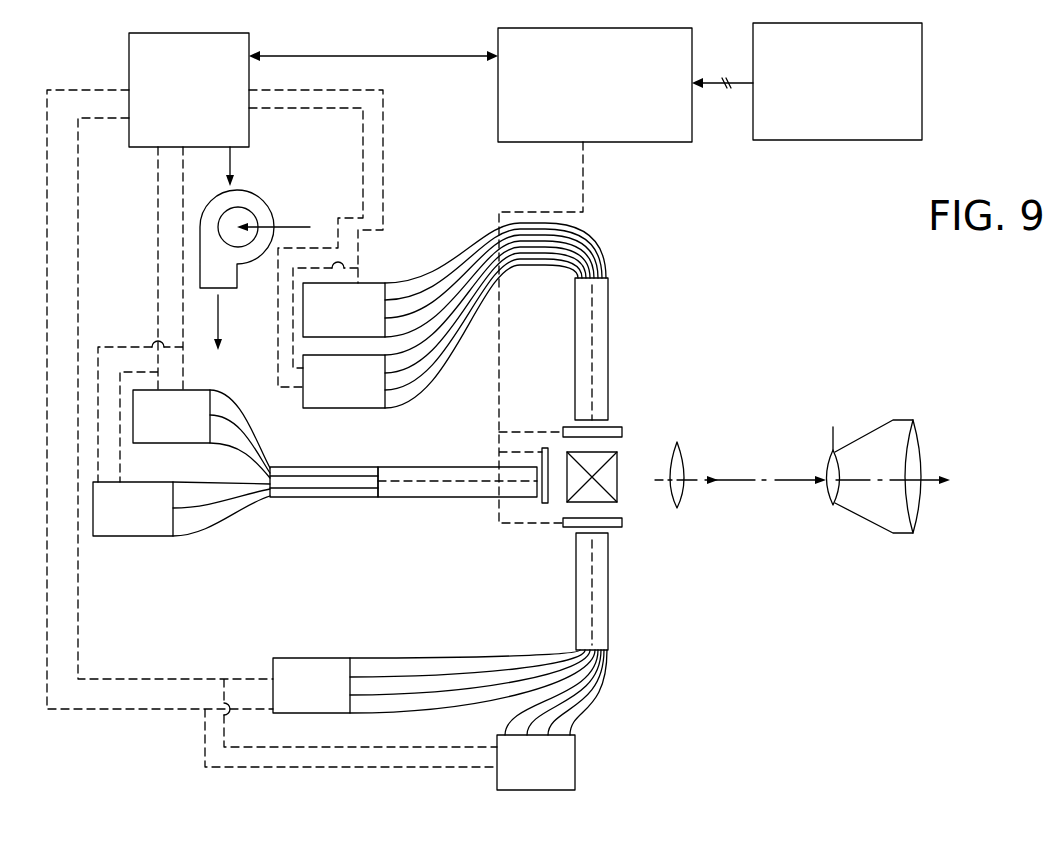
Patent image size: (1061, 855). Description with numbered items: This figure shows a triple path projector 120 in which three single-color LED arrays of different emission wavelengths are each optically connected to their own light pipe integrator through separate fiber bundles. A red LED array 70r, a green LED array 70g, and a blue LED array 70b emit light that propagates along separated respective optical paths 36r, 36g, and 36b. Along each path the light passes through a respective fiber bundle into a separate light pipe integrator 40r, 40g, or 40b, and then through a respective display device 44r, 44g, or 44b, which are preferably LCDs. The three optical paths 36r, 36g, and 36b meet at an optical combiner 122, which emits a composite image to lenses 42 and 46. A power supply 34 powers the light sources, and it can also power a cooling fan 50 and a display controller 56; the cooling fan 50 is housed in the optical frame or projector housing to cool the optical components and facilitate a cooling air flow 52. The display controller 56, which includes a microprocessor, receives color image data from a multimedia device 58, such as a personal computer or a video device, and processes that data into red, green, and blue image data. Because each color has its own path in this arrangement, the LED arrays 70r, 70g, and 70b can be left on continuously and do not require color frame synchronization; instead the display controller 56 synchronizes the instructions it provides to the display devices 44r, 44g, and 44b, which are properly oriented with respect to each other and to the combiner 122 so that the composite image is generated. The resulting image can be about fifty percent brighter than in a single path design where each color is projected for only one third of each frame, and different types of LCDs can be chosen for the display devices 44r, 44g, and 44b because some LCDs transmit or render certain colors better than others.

The power supply 34 is at (235, 44).
The cooling fan 50 is at (248, 197).
The cooling air flow 52 is at (218, 310).
The display controller 56 is at (623, 142).
The multimedia device 58 is at (817, 140).
The triple path projector 120 is at (718, 240).
The red LED array 70r is at (368, 283).
The green LED array 70g is at (170, 443).
The blue LED array 70b is at (313, 658).
The red optical path 36r is at (605, 364).
The green optical path 36g is at (445, 497).
The blue optical path 36b is at (605, 582).
The red light pipe integrator 40r is at (608, 330).
The green light pipe integrator 40g is at (420, 467).
The blue light pipe integrator 40b is at (608, 630).
The red display device 44r is at (612, 430).
The green display device 44g is at (548, 503).
The blue display device 44b is at (620, 525).
The optical combiner 122 is at (617, 468).
The lens 42 is at (682, 443).
The lens 46 is at (863, 440).